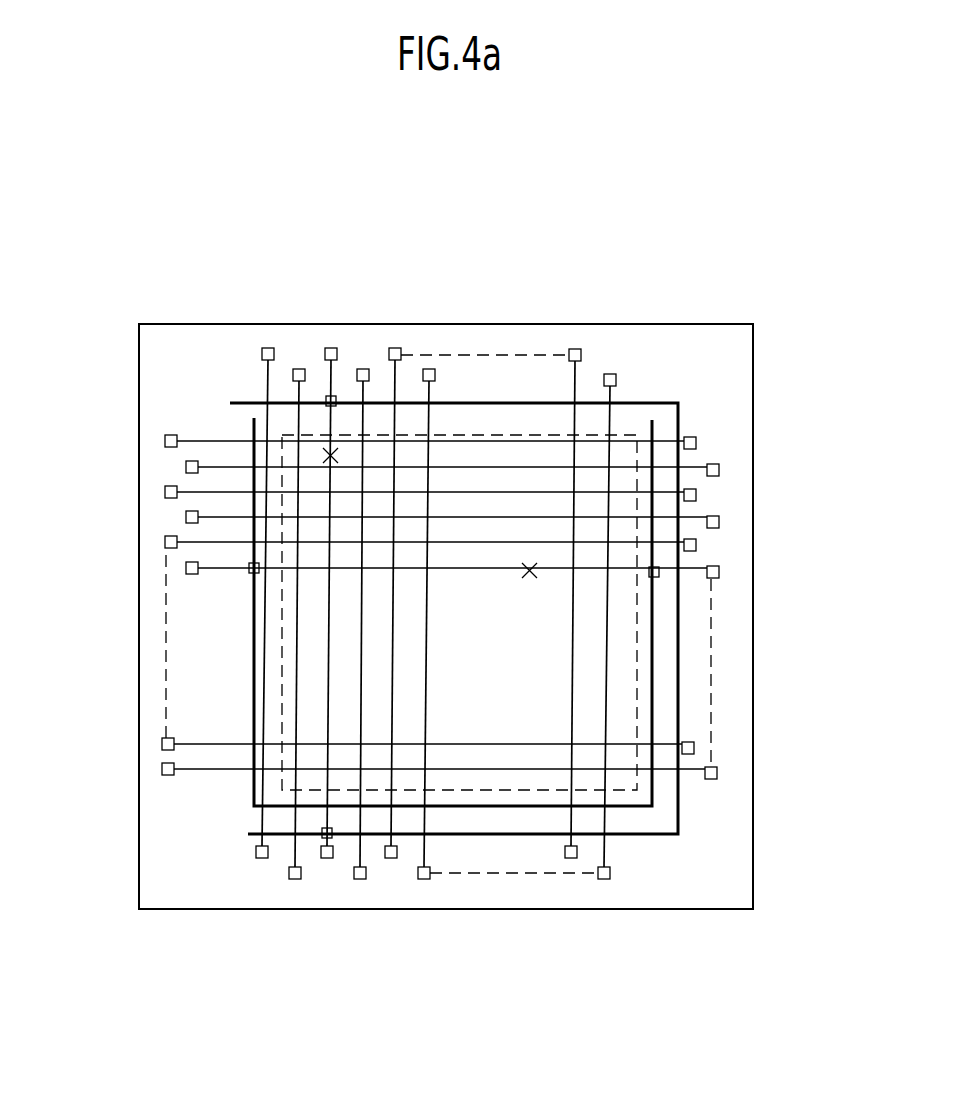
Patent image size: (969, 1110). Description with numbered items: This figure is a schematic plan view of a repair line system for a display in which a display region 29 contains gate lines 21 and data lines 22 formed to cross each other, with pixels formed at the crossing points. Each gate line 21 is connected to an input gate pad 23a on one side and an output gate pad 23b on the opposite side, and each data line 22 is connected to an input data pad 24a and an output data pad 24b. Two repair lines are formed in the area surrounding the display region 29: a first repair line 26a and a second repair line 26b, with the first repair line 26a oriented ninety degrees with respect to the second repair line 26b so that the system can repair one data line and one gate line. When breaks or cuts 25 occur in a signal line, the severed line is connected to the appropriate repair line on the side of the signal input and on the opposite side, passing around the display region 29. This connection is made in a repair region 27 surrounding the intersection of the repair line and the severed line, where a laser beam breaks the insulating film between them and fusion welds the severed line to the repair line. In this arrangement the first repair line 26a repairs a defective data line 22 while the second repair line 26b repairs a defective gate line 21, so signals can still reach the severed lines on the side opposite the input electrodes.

The gate lines 21 is at (553, 493).
The data lines 22 is at (327, 723).
The input gate pad 23a is at (719, 470).
The output gate pad 23b is at (186, 468).
The input data pad 24a is at (390, 859).
The output data pad 24b is at (577, 350).
The breaks or cuts 25 is at (333, 450).
The first repair line 26a is at (680, 420).
The second repair line 26b is at (250, 791).
The repair region 27 is at (327, 397).
The display region 29 is at (638, 653).